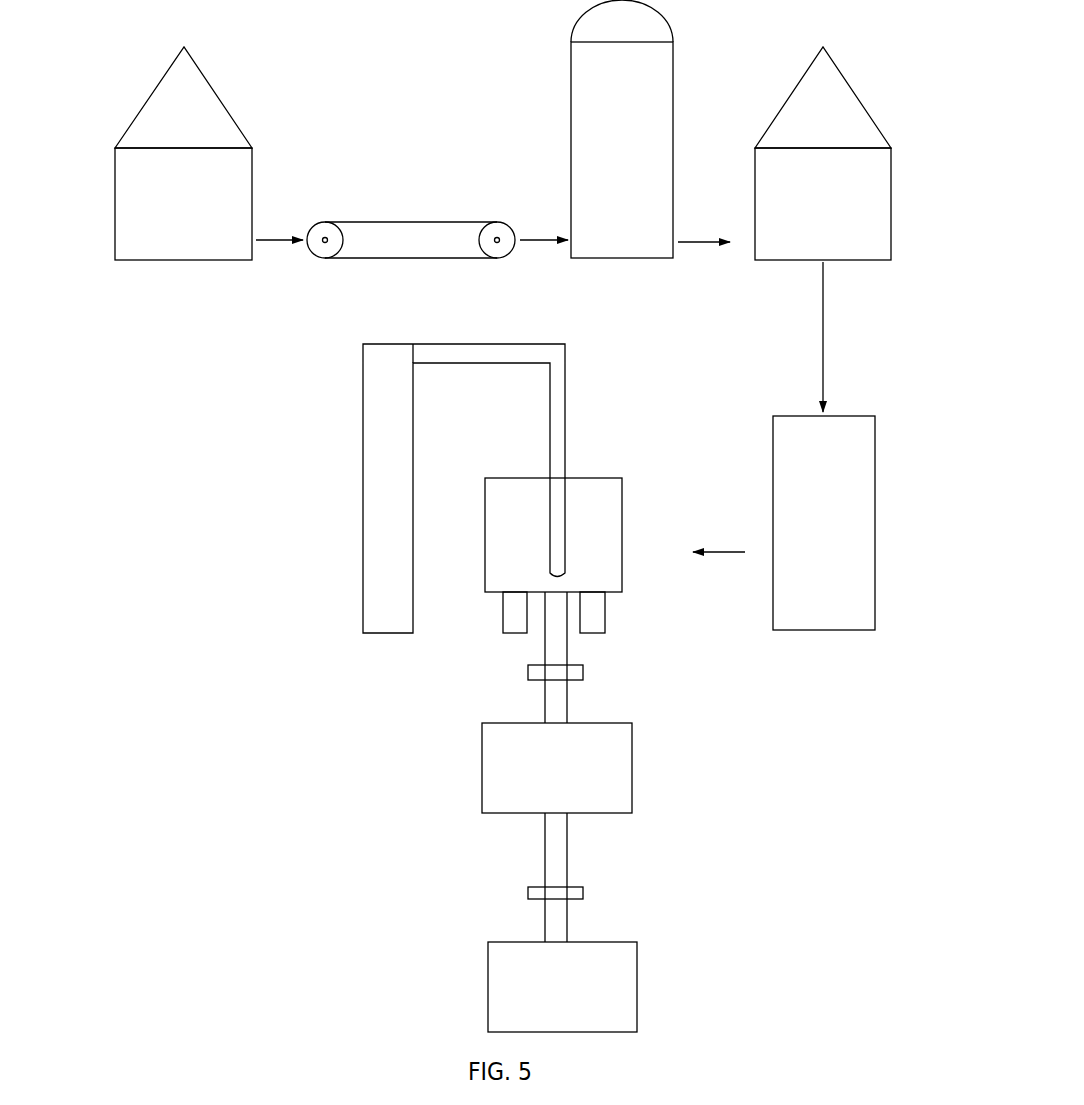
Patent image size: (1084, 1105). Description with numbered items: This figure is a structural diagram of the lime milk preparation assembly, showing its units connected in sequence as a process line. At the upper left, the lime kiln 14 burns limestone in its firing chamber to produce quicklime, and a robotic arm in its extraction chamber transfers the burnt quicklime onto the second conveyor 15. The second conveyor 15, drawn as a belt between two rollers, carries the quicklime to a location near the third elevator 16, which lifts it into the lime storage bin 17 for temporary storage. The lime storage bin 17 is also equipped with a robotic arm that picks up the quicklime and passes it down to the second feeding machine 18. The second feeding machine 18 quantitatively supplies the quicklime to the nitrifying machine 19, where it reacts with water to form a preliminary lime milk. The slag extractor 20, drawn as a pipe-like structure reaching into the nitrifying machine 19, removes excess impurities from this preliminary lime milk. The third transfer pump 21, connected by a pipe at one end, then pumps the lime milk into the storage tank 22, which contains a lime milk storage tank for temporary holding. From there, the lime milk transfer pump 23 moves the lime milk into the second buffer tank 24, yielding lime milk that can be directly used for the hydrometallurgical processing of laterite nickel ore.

The lime kiln 14 is at (125, 226).
The second conveyor 15 is at (414, 222).
The third elevator 16 is at (666, 168).
The lime storage bin 17 is at (873, 192).
The second feeding machine 18 is at (872, 500).
The nitrifying machine 19 is at (616, 528).
The slag extractor 20 is at (378, 498).
The third transfer pump 21 is at (585, 672).
The storage tank 22 is at (618, 769).
The lime milk transfer pump 23 is at (585, 893).
The second buffer tank 24 is at (624, 971).